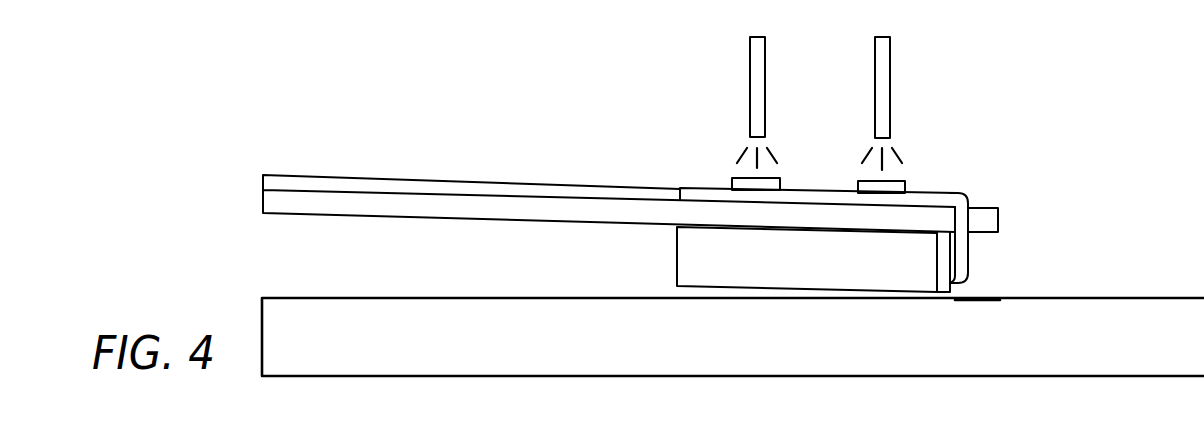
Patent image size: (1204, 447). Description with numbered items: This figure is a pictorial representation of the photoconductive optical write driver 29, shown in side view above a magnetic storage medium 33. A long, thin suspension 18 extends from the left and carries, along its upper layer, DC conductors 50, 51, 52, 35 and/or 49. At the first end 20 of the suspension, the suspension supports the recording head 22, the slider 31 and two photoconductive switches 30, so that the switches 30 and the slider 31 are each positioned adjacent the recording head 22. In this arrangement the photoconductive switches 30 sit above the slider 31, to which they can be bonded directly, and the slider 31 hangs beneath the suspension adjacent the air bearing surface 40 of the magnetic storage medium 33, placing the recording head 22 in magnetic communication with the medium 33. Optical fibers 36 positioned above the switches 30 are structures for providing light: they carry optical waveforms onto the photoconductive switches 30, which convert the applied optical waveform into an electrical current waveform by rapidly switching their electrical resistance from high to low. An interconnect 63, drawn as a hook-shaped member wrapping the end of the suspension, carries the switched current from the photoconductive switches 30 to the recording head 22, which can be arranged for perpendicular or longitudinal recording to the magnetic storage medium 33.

The suspension 18 is at (578, 185).
The DC conductor 50 is at (609, 185).
The DC conductor 51 is at (609, 185).
The DC conductor 52 is at (609, 185).
The DC conductor 35 is at (609, 185).
The DC conductor 49 is at (333, 185).
The first end of the suspension 20 is at (817, 213).
The photoconductive switch 30 is at (732, 180).
The optical fiber 36 is at (760, 84).
The interconnect 63 is at (957, 197).
The slider 31 is at (688, 260).
The recording head 22 is at (943, 263).
The air bearing surface 40 is at (955, 300).
The magnetic storage medium 33 is at (1117, 300).
The photoconductive optical write driver 29 is at (1106, 186).